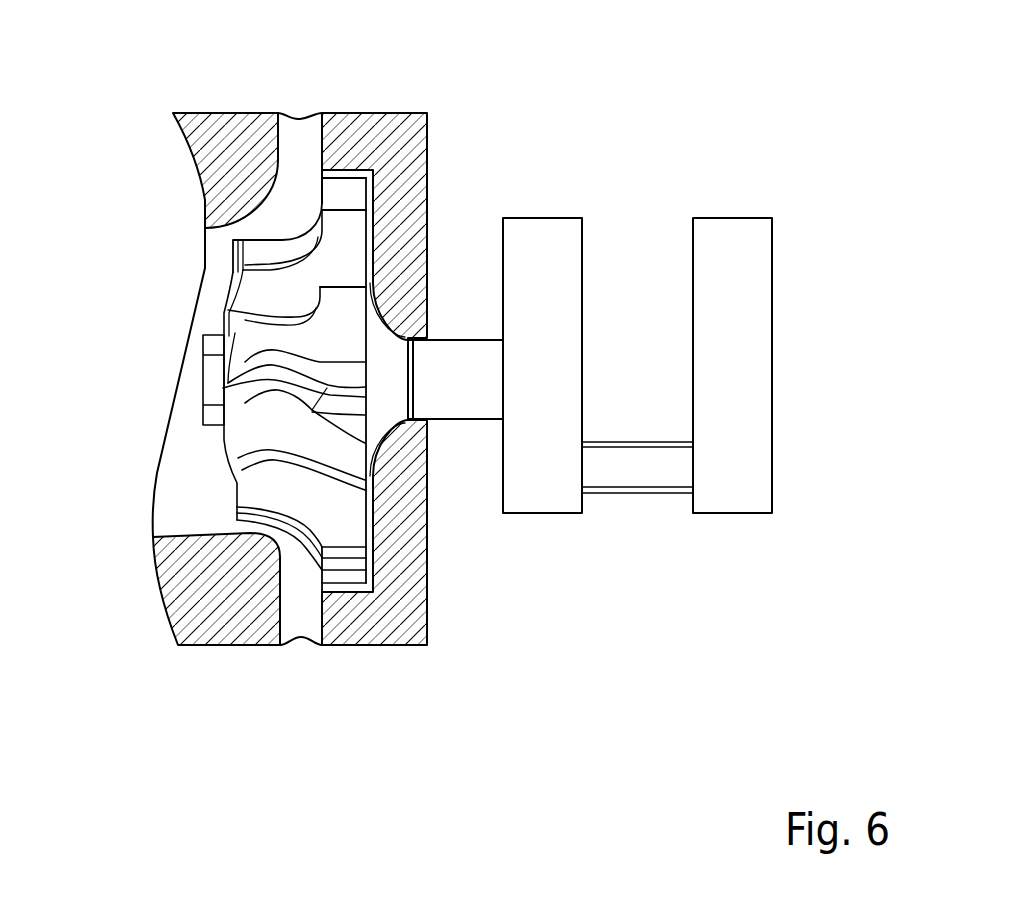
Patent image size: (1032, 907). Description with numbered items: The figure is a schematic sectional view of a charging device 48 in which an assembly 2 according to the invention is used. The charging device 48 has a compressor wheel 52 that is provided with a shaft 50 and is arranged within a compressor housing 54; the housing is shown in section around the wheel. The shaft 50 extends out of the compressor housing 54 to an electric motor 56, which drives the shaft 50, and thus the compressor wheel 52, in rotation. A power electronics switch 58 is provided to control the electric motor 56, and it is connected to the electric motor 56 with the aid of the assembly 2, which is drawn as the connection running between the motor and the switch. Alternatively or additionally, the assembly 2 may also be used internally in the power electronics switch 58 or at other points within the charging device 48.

The assembly 2 is at (620, 428).
The charging device 48 is at (215, 669).
The shaft 50 is at (467, 370).
The compressor wheel 52 is at (232, 285).
The compressor housing 54 is at (373, 135).
The electric motor 56 is at (540, 262).
The power electronics switch 58 is at (725, 270).